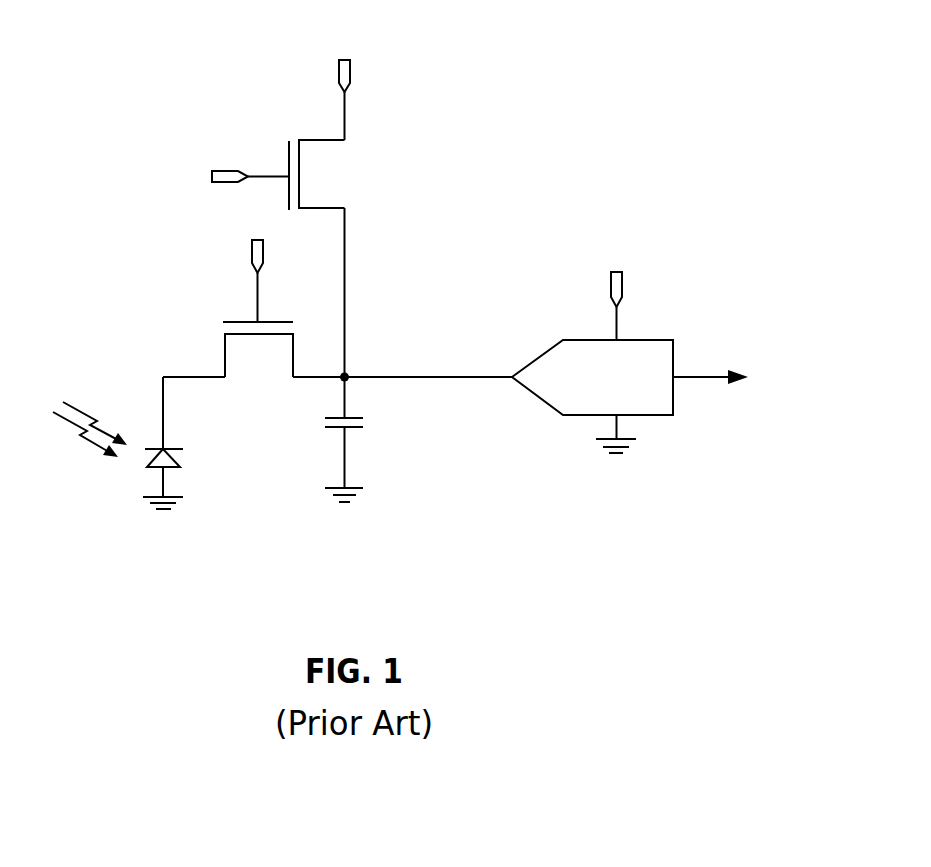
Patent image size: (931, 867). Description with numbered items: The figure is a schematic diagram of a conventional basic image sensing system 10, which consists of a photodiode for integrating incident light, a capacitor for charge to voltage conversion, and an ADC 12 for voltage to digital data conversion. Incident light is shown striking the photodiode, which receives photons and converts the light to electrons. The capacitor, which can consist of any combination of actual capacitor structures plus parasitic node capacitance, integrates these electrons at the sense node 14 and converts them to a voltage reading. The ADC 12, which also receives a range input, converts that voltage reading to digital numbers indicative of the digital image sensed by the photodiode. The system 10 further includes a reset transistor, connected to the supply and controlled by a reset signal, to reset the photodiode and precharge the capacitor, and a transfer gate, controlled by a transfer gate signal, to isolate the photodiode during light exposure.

The basic image sensing system 10 is at (416, 270).
The ADC 12 is at (653, 340).
The sense node 14 is at (367, 377).